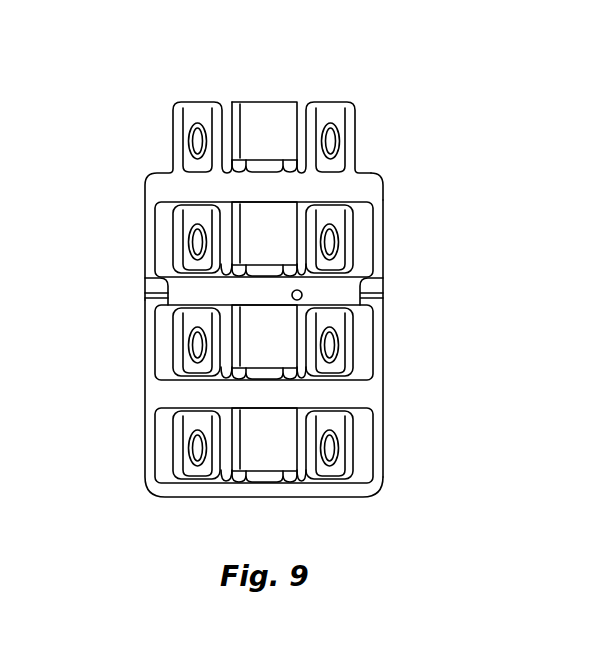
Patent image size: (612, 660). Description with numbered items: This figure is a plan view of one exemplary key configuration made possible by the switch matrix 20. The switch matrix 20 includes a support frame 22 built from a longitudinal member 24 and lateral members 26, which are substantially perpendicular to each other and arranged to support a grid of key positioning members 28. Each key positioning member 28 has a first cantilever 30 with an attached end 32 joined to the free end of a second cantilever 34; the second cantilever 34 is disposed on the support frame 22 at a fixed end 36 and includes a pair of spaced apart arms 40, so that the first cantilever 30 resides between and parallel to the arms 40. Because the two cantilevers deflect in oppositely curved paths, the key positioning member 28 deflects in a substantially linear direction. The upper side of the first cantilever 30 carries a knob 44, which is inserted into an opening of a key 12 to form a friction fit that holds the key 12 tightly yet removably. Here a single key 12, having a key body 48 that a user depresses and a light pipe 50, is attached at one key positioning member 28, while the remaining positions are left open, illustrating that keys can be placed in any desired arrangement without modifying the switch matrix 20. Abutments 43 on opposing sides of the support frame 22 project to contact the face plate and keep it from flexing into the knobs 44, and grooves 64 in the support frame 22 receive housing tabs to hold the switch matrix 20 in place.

The key 12 is at (278, 120).
The switch matrix 20 is at (358, 113).
The support frame 22 is at (358, 185).
The longitudinal member 24 is at (383, 198).
The lateral member 26 is at (182, 195).
The key positioning member 28 is at (328, 325).
The first cantilever 30 is at (362, 288).
The attached end 32 is at (330, 312).
The second cantilever 34 is at (353, 342).
The fixed end 36 is at (337, 378).
The arms 40 is at (348, 358).
The abutment 43 is at (152, 297).
The knob 44 is at (195, 248).
The key body 48 is at (258, 117).
The light pipe 50 is at (237, 110).
The groove 64 is at (150, 287).